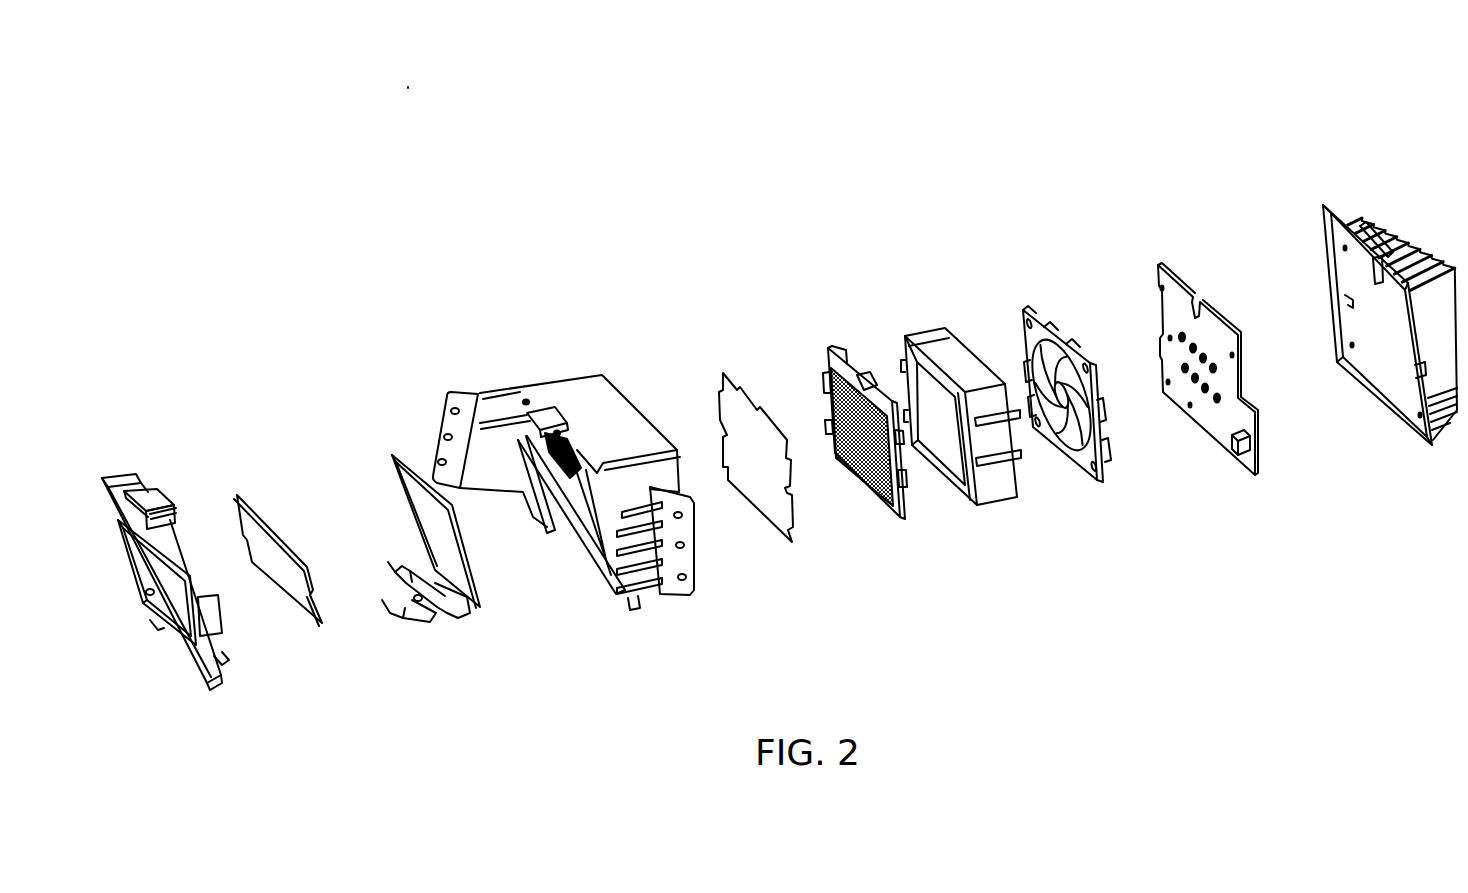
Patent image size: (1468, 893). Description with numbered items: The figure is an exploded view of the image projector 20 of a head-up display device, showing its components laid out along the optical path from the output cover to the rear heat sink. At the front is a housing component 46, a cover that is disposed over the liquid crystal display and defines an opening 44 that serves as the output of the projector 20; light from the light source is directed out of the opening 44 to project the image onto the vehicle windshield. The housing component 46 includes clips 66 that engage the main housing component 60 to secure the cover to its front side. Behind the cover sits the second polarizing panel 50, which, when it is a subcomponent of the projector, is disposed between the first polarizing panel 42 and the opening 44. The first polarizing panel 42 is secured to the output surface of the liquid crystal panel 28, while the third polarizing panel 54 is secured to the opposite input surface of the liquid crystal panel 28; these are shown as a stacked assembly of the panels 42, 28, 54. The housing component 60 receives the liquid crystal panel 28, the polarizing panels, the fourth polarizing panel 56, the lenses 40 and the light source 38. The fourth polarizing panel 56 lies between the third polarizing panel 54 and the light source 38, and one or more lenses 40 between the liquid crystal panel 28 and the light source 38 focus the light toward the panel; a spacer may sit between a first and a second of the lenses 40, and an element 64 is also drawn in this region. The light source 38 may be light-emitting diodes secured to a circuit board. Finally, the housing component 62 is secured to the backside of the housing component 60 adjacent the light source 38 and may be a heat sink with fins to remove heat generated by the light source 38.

The image projector 20 is at (450, 127).
The housing component 46 is at (120, 460).
The opening 44 is at (152, 568).
The clips 66 is at (150, 490).
The second polarizing panel 50 is at (237, 492).
The first polarizing panel 42 is at (388, 496).
The liquid crystal panel 28 is at (388, 496).
The third polarizing panel 54 is at (378, 444).
The housing component 60 is at (552, 384).
The fourth polarizing panel 56 is at (723, 373).
The lenses 40 is at (830, 346).
The enclosure box 64 is at (935, 333).
The light source 38 is at (1158, 263).
The housing component 62 is at (1325, 202).